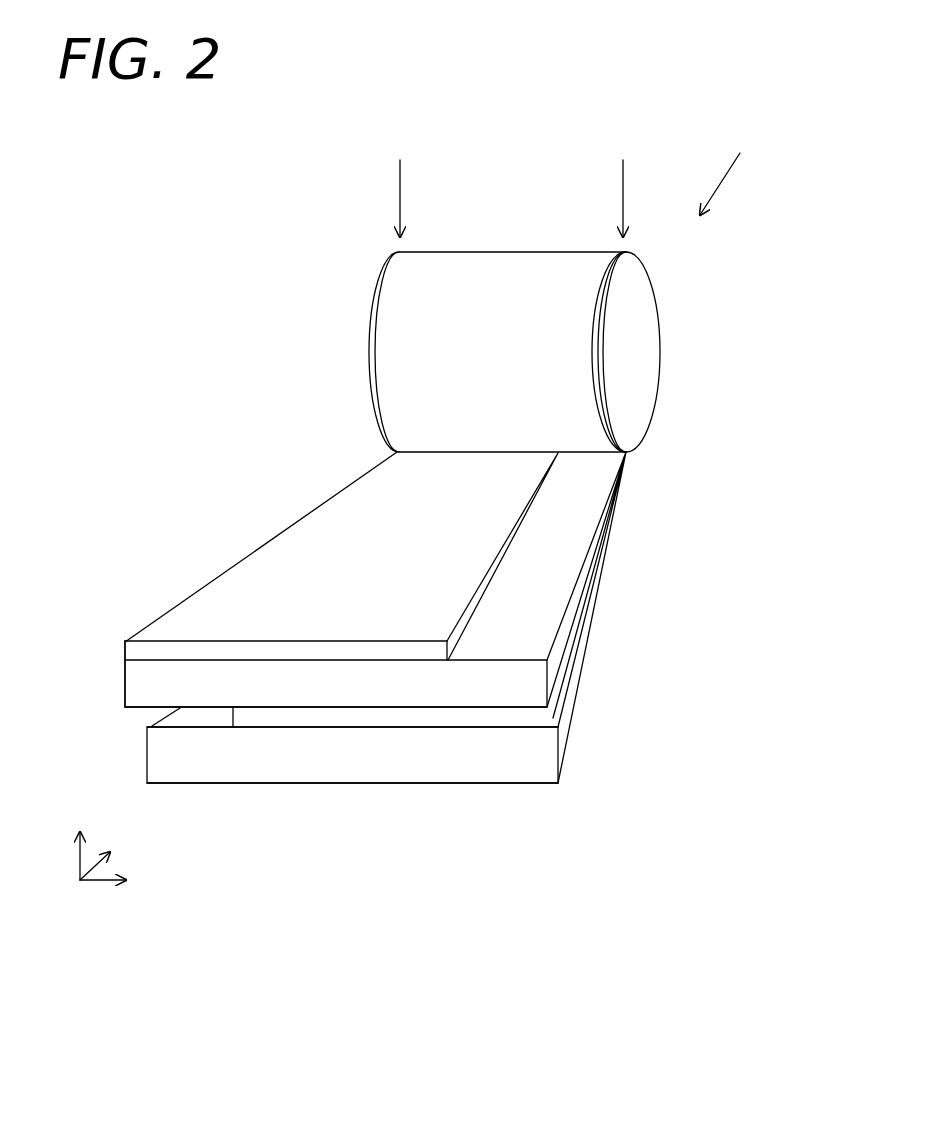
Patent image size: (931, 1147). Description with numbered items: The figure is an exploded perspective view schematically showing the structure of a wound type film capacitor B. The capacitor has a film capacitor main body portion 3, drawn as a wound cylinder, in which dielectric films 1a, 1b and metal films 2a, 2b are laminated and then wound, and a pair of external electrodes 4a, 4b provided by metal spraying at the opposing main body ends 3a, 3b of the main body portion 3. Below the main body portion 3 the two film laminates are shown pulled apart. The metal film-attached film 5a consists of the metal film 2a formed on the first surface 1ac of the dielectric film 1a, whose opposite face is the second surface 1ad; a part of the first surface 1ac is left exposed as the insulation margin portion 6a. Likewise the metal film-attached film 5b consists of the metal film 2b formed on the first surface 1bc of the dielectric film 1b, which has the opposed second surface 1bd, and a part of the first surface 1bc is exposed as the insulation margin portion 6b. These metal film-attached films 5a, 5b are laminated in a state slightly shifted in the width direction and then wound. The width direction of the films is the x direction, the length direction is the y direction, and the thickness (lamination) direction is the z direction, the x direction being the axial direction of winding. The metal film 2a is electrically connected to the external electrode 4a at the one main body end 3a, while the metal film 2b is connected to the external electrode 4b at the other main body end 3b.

The film capacitor main body portion 3 is at (518, 257).
The one main body end 3a is at (399, 178).
The other main body end 3b is at (624, 178).
The external electrode 4a is at (368, 345).
The external electrode 4b is at (647, 330).
The metal film-attached film 5a is at (178, 470).
The dielectric film 1a is at (255, 683).
The metal film 2a is at (307, 658).
The first surface 1ac is at (177, 660).
The second surface 1ad is at (222, 705).
The insulation margin portion 6a is at (553, 567).
The insulation margin portion 6b is at (185, 723).
The metal film-attached film 5b is at (352, 893).
The dielectric film 1b is at (340, 757).
The metal film 2b is at (456, 720).
The first surface 1bc is at (535, 726).
The second surface 1bd is at (523, 783).
The wound type film capacitor B is at (758, 133).